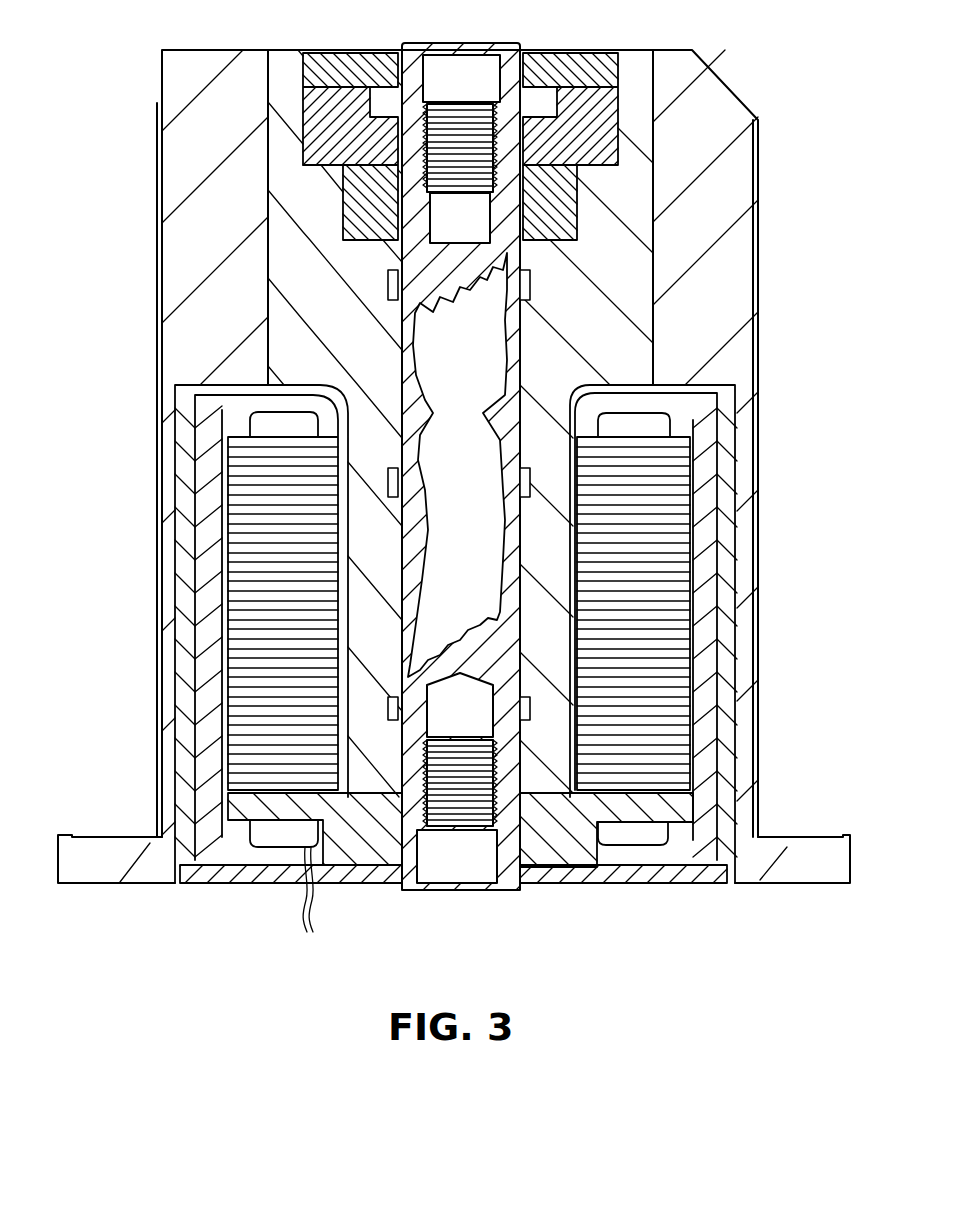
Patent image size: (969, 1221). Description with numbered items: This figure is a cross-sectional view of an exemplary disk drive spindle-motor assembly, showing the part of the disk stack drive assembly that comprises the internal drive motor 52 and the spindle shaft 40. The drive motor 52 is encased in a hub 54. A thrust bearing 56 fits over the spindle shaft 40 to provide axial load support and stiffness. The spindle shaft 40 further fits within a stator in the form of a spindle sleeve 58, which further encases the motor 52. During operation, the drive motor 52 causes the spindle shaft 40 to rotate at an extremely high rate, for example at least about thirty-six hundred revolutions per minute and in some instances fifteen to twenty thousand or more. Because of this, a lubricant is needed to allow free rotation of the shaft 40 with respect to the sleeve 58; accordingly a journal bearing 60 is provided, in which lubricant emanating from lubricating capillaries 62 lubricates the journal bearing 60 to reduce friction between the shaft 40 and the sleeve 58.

The spindle shaft 40 is at (437, 372).
The drive motor 52 is at (262, 483).
The hub 54 is at (230, 140).
The thrust bearing 56 is at (580, 213).
The spindle sleeve 58 is at (555, 278).
The journal bearing 60 is at (522, 357).
The lubricating capillaries 62 is at (457, 465).